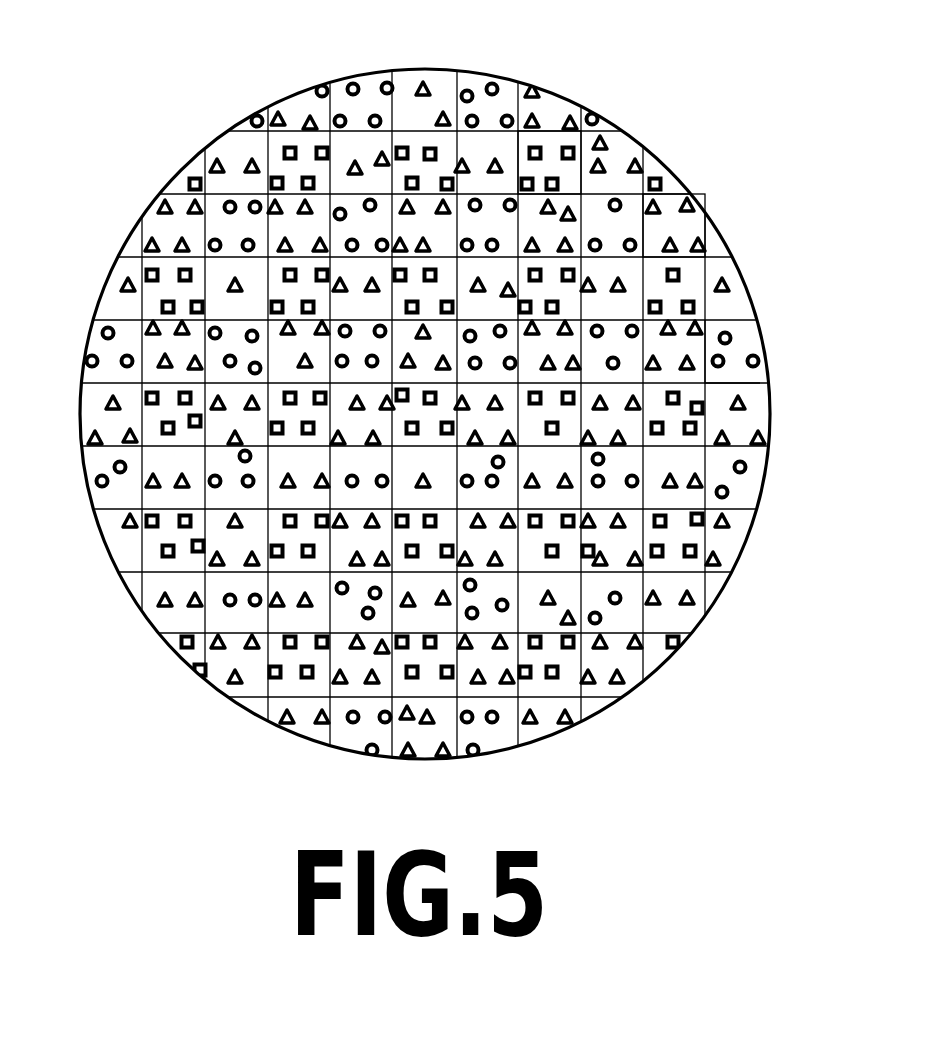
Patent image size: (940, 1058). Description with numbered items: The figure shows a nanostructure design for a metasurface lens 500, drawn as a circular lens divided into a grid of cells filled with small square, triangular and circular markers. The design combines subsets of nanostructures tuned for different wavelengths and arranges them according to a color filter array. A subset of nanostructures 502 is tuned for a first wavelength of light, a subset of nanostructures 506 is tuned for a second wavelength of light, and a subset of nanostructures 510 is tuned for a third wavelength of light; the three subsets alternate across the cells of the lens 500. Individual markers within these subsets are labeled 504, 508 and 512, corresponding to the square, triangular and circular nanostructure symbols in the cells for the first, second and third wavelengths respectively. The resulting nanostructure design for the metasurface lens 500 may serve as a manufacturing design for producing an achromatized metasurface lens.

The metasurface lens 500 is at (455, 72).
The subset of nanostructures for a first wavelength of light 502 is at (552, 141).
The first test structure 504 is at (575, 148).
The subset of nanostructures for a second wavelength of light 506 is at (667, 204).
The second test structure 508 is at (698, 245).
The subset of nanostructures for a third wavelength of light 510 is at (720, 324).
The third test structure 512 is at (753, 361).